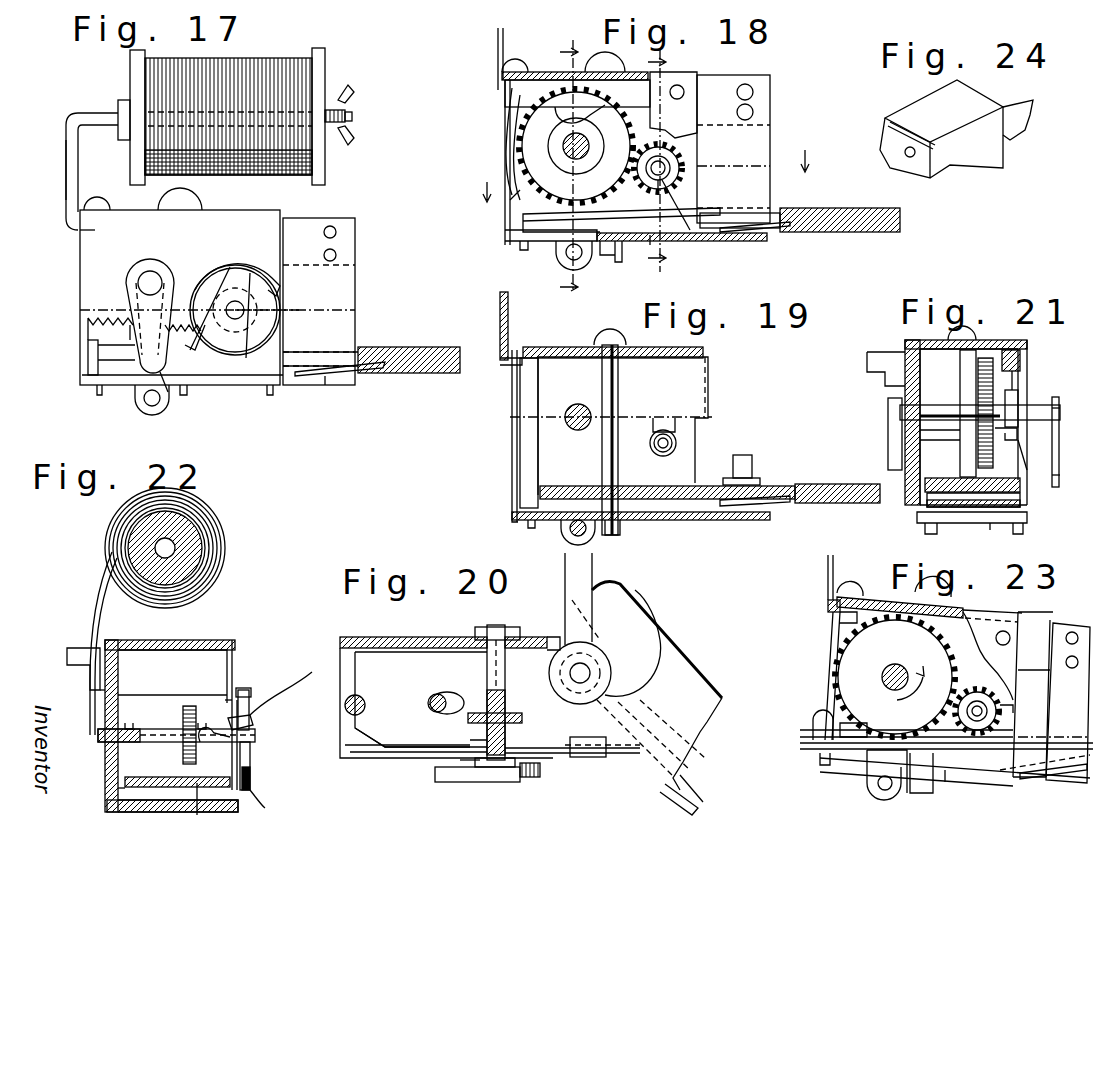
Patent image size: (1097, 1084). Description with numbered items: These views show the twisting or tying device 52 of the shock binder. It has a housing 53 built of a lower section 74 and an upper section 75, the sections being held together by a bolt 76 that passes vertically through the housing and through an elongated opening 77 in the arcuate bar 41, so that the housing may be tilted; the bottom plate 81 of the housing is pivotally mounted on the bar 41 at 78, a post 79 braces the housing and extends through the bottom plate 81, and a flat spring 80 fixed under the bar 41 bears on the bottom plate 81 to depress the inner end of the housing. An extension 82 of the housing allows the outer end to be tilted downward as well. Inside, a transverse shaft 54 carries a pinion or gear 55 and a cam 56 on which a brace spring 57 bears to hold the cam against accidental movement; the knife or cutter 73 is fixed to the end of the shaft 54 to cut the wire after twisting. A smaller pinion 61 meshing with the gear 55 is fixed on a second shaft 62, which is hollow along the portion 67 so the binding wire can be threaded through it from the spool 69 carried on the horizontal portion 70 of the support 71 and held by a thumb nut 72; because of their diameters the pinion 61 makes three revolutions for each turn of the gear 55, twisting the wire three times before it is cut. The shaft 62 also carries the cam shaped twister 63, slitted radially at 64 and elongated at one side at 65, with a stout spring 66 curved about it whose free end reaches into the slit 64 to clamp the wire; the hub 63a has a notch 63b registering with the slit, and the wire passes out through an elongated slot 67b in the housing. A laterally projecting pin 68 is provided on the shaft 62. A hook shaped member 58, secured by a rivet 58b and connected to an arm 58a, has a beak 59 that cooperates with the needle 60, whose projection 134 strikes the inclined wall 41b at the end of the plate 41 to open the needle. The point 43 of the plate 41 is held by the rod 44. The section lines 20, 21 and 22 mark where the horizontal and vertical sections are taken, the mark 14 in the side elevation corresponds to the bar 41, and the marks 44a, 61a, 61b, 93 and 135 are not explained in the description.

In FIG. 17, the slide bar 14 is at (400, 355).
In FIG. 18, the section line 20 is at (646, 170).
In FIG. 18, the section line 21 is at (555, 168).
In FIG. 18, the section line 22 is at (645, 159).
In FIG. 18, the arcuate bar 41 is at (800, 210).
In FIG. 19, the arcuate bar 41 is at (795, 490).
In FIG. 21, the arcuate bar 41 is at (972, 481).
In FIG. 22, the arcuate bar 41 is at (212, 808).
In FIG. 20, the arcuate bar 41 is at (590, 753).
In FIG. 23, the arcuate bar 41 is at (985, 749).
In FIG. 20, the inclined wall 41b is at (370, 745).
In FIG. 19, the point of the plate 43 is at (745, 455).
In FIG. 20, the point of the plate 43 is at (590, 675).
In FIG. 19, the rod 44 is at (752, 480).
In FIG. 20, the rod 44 is at (592, 565).
In FIG. 20, the arm extension 44a is at (625, 625).
In FIG. 17, the twisting or tying device 52 is at (217, 288).
In FIG. 18, the twisting or tying device 52 is at (768, 90).
In FIG. 19, the twisting or tying device 52 is at (520, 425).
In FIG. 21, the twisting or tying device 52 is at (920, 440).
In FIG. 22, the twisting or tying device 52 is at (171, 711).
In FIG. 20, the twisting or tying device 52 is at (450, 760).
In FIG. 23, the twisting or tying device 52 is at (830, 650).
In FIG. 19, the housing 53 is at (633, 416).
In FIG. 21, the housing 53 is at (905, 378).
In FIG. 22, the housing 53 is at (215, 665).
In FIG. 20, the housing 53 is at (358, 650).
In FIG. 17, the transverse shaft 54 is at (138, 283).
In FIG. 18, the transverse shaft 54 is at (560, 140).
In FIG. 19, the transverse shaft 54 is at (565, 415).
In FIG. 18, the pinion or gear 55 is at (545, 160).
In FIG. 21, the pinion or gear 55 is at (1027, 480).
In FIG. 23, the pinion or gear 55 is at (848, 677).
In FIG. 18, the cam 56 is at (515, 150).
In FIG. 21, the cam 56 is at (1018, 400).
In FIG. 18, the brace spring 57 is at (545, 112).
In FIG. 21, the brace spring 57 is at (978, 380).
In FIG. 21, the hook shaped member 58 is at (1022, 360).
In FIG. 23, the hook shaped member 58 is at (1035, 640).
In FIG. 17, the arm 58a is at (345, 292).
In FIG. 18, the arm 58a is at (770, 140).
In FIG. 20, the arm 58a is at (610, 757).
In FIG. 23, the arm 58a is at (1065, 770).
In FIG. 18, the rivet 58b is at (685, 85).
In FIG. 23, the rivet 58b is at (996, 638).
In FIG. 17, the beak 59 is at (90, 322).
In FIG. 18, the beak 59 is at (530, 95).
In FIG. 21, the beak 59 is at (950, 408).
In FIG. 23, the needle 60 is at (870, 750).
In FIG. 18, the pinion 61 is at (675, 155).
In FIG. 22, the pinion 61 is at (188, 708).
In FIG. 20, the pinion 61 is at (522, 718).
In FIG. 23, the pinion 61 is at (975, 690).
In FIG. 21, the pinion hub 61a is at (1074, 405).
In FIG. 22, the pinion hub 61a is at (218, 709).
In FIG. 21, the pinion shaft 61b is at (1074, 480).
In FIG. 17, the shaft 62 is at (245, 307).
In FIG. 18, the shaft 62 is at (672, 172).
In FIG. 19, the shaft 62 is at (668, 436).
In FIG. 21, the shaft 62 is at (925, 445).
In FIG. 22, the shaft 62 is at (250, 700).
In FIG. 20, the shaft 62 is at (487, 672).
In FIG. 23, the shaft 62 is at (990, 716).
In FIG. 17, the cam shaped twister 63 is at (250, 350).
In FIG. 22, the cam shaped twister 63 is at (255, 748).
In FIG. 20, the cam shaped twister 63 is at (520, 778).
In FIG. 17, the hub 63a is at (250, 358).
In FIG. 20, the hub 63a is at (472, 783).
In FIG. 22, the notch or groove 63b is at (255, 720).
In FIG. 17, the slit 64 is at (218, 345).
In FIG. 17, the elongated portion 65 is at (180, 320).
In FIG. 20, the elongated portion 65 is at (450, 782).
In FIG. 17, the stout spring 66 is at (210, 280).
In FIG. 22, the stout spring 66 is at (265, 800).
In FIG. 22, the hollow portion 67 is at (100, 742).
In FIG. 22, the elongated slot 67b is at (262, 748).
In FIG. 18, the laterally projecting pin 68 is at (668, 190).
In FIG. 21, the laterally projecting pin 68 is at (1017, 440).
In FIG. 22, the laterally projecting pin 68 is at (188, 770).
In FIG. 23, the laterally projecting pin 68 is at (1020, 708).
In FIG. 17, the spool 69 is at (318, 165).
In FIG. 22, the spool 69 is at (180, 548).
In FIG. 17, the horizontal portion 70 is at (97, 113).
In FIG. 22, the horizontal portion 70 is at (110, 552).
In FIG. 17, the support 71 is at (66, 172).
In FIG. 18, the support 71 is at (505, 40).
In FIG. 19, the support 71 is at (510, 335).
In FIG. 23, the support 71 is at (828, 568).
In FIG. 17, the thumb nut 72 is at (350, 92).
In FIG. 17, the knife or cutter 73 is at (140, 355).
In FIG. 21, the knife or cutter 73 is at (1059, 428).
In FIG. 18, the lower section 74 is at (575, 76).
In FIG. 19, the lower section 74 is at (613, 352).
In FIG. 21, the lower section 74 is at (920, 500).
In FIG. 22, the lower section 74 is at (110, 795).
In FIG. 20, the lower section 74 is at (395, 636).
In FIG. 23, the lower section 74 is at (900, 607).
In FIG. 17, the upper section 75 is at (105, 238).
In FIG. 24, the upper section 75 is at (952, 120).
In FIG. 21, the upper section 75 is at (965, 400).
In FIG. 22, the upper section 75 is at (105, 698).
In FIG. 20, the upper section 75 is at (495, 627).
In FIG. 17, the bolt 76 is at (160, 203).
In FIG. 18, the bolt 76 is at (605, 60).
In FIG. 19, the bolt 76 is at (618, 380).
In FIG. 21, the bolt 76 is at (978, 340).
In FIG. 20, the bolt 76 is at (430, 708).
In FIG. 23, the bolt 76 is at (950, 603).
In FIG. 19, the elongated opening 77 is at (661, 446).
In FIG. 20, the elongated opening 77 is at (450, 692).
In FIG. 17, the pivot 78 is at (148, 408).
In FIG. 18, the pivot 78 is at (580, 260).
In FIG. 19, the pivot 78 is at (568, 538).
In FIG. 21, the pivot 78 is at (927, 535).
In FIG. 23, the pivot 78 is at (895, 790).
In FIG. 17, the post 79 is at (90, 350).
In FIG. 18, the post 79 is at (530, 218).
In FIG. 19, the post 79 is at (530, 458).
In FIG. 22, the post 79 is at (300, 722).
In FIG. 20, the post 79 is at (345, 707).
In FIG. 23, the post 79 is at (838, 620).
In FIG. 17, the flat spring 80 is at (340, 372).
In FIG. 18, the flat spring 80 is at (780, 228).
In FIG. 19, the flat spring 80 is at (760, 503).
In FIG. 23, the flat spring 80 is at (1045, 780).
In FIG. 17, the bottom plate 81 is at (325, 385).
In FIG. 18, the bottom plate 81 is at (655, 240).
In FIG. 19, the bottom plate 81 is at (650, 518).
In FIG. 21, the bottom plate 81 is at (990, 530).
In FIG. 23, the bottom plate 81 is at (950, 785).
In FIG. 24, the extension 82 is at (1020, 112).
In FIG. 21, the extension 82 is at (880, 365).
In FIG. 22, the extension 82 is at (80, 650).
In FIG. 21, the plate 93 is at (888, 430).
In FIG. 23, the projection 134 is at (822, 745).
In FIG. 17, the link 135 is at (165, 400).